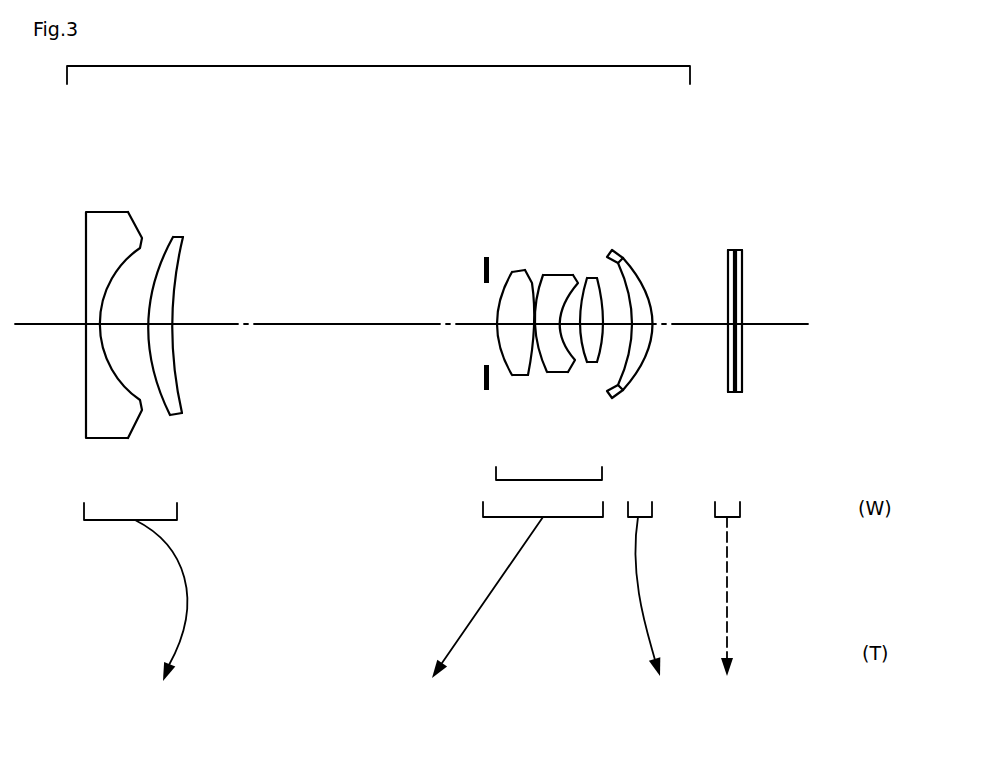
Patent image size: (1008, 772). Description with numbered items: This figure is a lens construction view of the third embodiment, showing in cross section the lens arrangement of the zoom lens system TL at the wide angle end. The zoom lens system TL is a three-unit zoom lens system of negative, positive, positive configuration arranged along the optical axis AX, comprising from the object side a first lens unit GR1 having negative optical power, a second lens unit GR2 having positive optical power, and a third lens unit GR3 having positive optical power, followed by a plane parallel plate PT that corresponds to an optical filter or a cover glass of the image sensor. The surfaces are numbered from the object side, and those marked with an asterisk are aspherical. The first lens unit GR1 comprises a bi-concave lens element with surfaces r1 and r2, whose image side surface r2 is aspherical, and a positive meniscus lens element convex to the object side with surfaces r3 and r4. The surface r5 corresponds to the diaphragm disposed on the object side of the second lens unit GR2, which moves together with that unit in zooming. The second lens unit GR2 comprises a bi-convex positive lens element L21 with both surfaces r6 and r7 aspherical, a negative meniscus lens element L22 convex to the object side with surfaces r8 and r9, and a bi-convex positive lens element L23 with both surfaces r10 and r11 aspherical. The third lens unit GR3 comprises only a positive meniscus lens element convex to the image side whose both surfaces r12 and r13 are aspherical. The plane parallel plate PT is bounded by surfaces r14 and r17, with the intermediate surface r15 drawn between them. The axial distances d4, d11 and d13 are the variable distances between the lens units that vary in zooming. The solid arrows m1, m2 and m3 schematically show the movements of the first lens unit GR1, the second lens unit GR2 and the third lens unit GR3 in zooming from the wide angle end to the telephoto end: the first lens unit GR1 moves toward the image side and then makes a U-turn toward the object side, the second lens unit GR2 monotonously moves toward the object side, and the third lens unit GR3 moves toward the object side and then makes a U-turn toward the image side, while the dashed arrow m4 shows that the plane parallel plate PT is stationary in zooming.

The first surface r1 is at (86, 238).
The second surface r2 is at (128, 252).
The third surface r3 is at (153, 262).
The fourth surface r4 is at (182, 272).
The fifth surface r5 is at (483, 268).
The sixth surface r6 is at (510, 270).
The seventh surface r7 is at (525, 270).
The eighth surface r8 is at (541, 273).
The ninth surface r9 is at (573, 275).
The tenth surface r10 is at (587, 277).
The eleventh surface r11 is at (604, 290).
The twelfth surface r12 is at (622, 262).
The thirteenth surface r13 is at (638, 270).
The fourteenth surface r14 is at (728, 265).
The fifteenth surface r15 is at (737, 260).
The seventeenth surface r17 is at (742, 280).
The fourth axial distance d4 is at (334, 311).
The eleventh axial distance d11 is at (617, 327).
The thirteenth axial distance d13 is at (685, 308).
The bi-convex positive lens element L21 is at (466, 277).
The negative meniscus lens element L22 is at (549, 324).
The bi-convex positive lens element L23 is at (608, 287).
The first lens unit GR1 is at (152, 527).
The second lens unit GR2 is at (543, 503).
The third lens unit GR3 is at (659, 525).
The plane parallel plate PT is at (738, 525).
The zoom lens system TL is at (378, 59).
The optical axis AX is at (772, 324).
The solid arrow m1 is at (193, 605).
The solid arrow m2 is at (492, 592).
The solid arrow m3 is at (637, 598).
The dashed arrow m4 is at (727, 603).